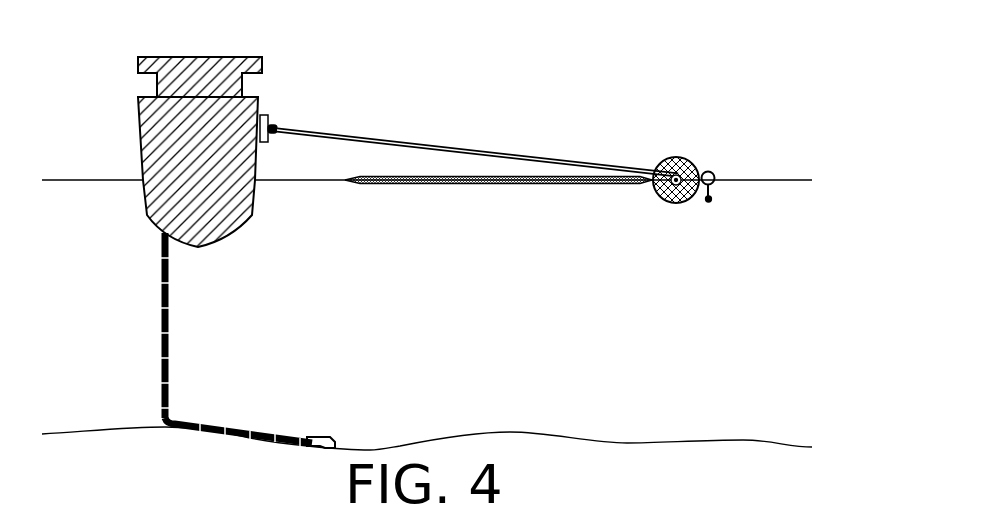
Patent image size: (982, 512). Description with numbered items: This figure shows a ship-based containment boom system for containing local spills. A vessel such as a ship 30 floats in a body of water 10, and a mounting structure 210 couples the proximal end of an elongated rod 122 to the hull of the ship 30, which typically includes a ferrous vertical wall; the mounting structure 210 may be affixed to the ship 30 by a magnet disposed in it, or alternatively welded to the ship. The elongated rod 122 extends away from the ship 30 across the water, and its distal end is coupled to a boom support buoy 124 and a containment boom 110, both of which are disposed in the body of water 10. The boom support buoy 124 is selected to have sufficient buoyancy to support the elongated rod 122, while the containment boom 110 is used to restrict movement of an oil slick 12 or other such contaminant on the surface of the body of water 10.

The body of water 10 is at (748, 180).
The oil slick 12 is at (382, 177).
The ship 30 is at (203, 56).
The containment boom 110 is at (710, 171).
The elongated rod 122 is at (354, 138).
The boom support buoy 124 is at (667, 201).
The mounting structure 210 is at (287, 110).